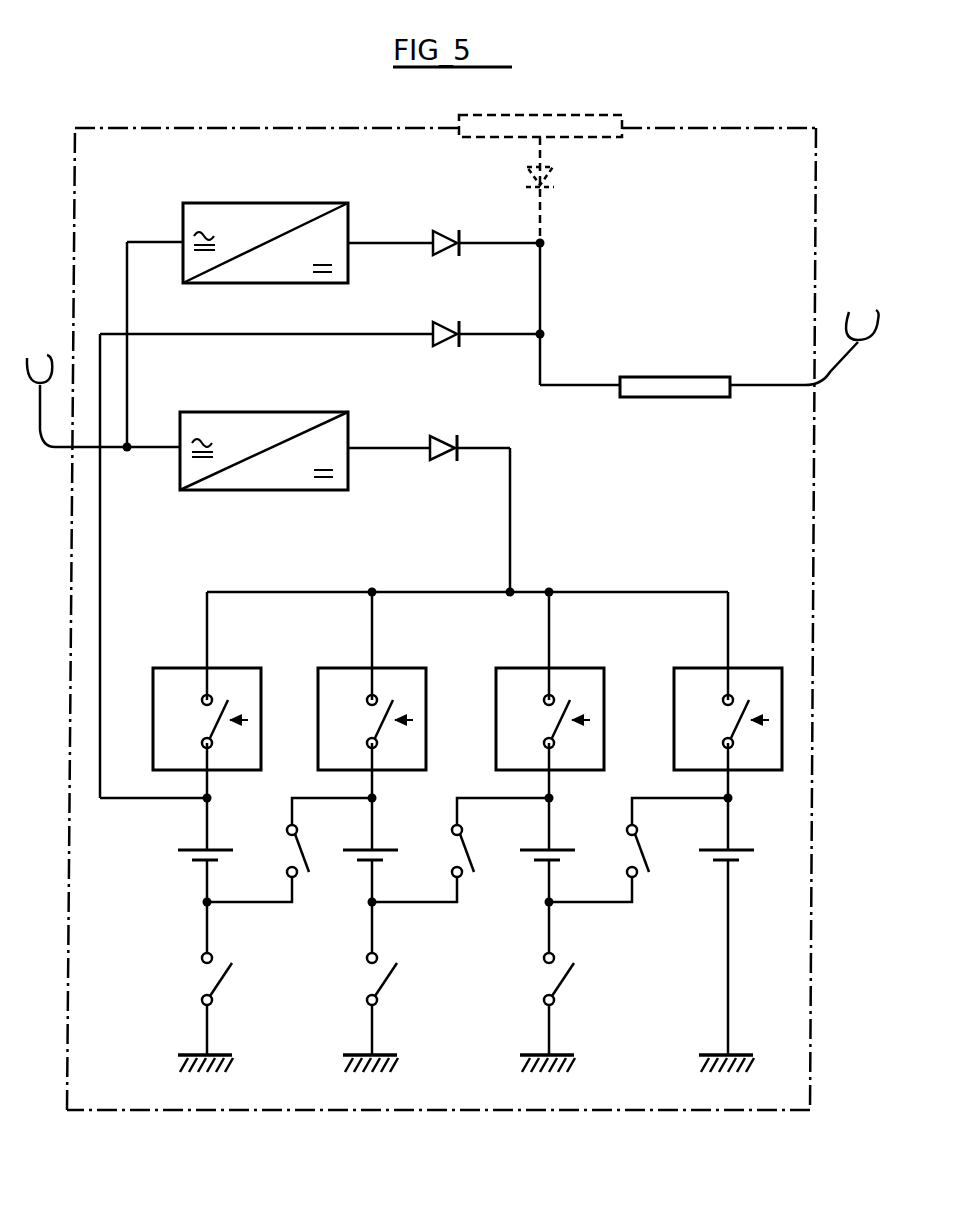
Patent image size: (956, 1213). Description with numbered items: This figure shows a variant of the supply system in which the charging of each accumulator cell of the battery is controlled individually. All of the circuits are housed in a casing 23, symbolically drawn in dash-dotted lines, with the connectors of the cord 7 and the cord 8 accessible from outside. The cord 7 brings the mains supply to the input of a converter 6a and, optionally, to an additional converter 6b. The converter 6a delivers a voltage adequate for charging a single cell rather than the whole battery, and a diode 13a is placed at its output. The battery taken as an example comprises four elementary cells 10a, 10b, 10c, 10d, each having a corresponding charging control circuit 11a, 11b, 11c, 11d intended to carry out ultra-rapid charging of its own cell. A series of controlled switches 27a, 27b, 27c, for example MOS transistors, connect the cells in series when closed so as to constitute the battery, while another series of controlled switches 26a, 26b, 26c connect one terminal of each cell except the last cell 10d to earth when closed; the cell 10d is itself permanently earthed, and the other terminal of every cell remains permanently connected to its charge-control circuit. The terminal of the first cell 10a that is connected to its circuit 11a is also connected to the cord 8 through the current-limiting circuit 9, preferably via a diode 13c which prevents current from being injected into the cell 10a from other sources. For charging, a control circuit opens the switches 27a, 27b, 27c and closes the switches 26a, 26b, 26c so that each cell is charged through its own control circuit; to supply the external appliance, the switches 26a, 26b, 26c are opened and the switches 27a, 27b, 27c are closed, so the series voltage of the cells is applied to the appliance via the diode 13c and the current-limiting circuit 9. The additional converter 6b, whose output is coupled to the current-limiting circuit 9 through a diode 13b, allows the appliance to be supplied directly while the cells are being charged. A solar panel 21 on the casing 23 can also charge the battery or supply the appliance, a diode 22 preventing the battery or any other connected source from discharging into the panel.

The converter 6a is at (270, 410).
The additional converter 6b is at (288, 200).
The cord 7 is at (38, 455).
The cord 8 is at (848, 298).
The current-limiting circuit 9 is at (677, 375).
The elementary cell 10a is at (178, 860).
The elementary cell 10b is at (352, 870).
The elementary cell 10c is at (540, 870).
The elementary cell 10d is at (705, 870).
The charging control circuit 11a is at (255, 662).
The charging control circuit 11b is at (405, 662).
The charging control circuit 11c is at (580, 662).
The charging control circuit 11d is at (765, 662).
The diode 13a is at (445, 435).
The diode 13b is at (450, 228).
The diode 13c is at (448, 320).
The solar panel 21 is at (600, 110).
The diode 22 is at (560, 176).
The casing 23 is at (505, 1114).
The controlled switch 26a is at (235, 980).
The controlled switch 26b is at (398, 985).
The controlled switch 26c is at (575, 985).
The controlled switch 27a is at (285, 851).
The controlled switch 27b is at (450, 851).
The controlled switch 27c is at (625, 851).